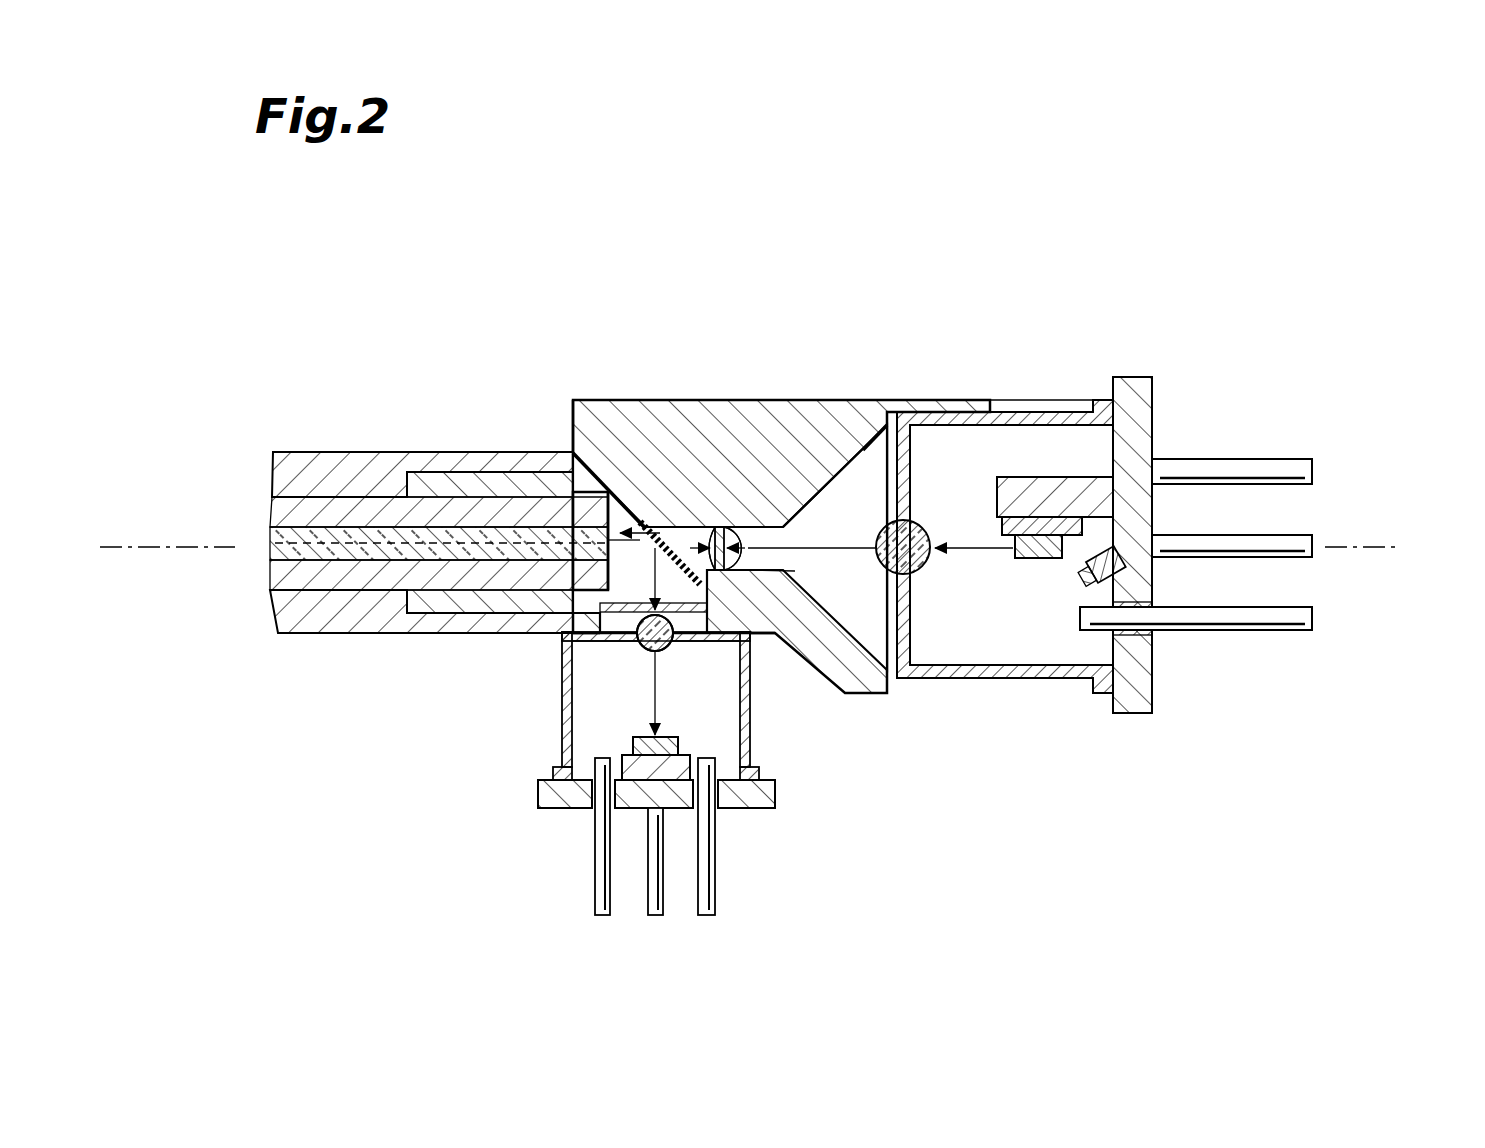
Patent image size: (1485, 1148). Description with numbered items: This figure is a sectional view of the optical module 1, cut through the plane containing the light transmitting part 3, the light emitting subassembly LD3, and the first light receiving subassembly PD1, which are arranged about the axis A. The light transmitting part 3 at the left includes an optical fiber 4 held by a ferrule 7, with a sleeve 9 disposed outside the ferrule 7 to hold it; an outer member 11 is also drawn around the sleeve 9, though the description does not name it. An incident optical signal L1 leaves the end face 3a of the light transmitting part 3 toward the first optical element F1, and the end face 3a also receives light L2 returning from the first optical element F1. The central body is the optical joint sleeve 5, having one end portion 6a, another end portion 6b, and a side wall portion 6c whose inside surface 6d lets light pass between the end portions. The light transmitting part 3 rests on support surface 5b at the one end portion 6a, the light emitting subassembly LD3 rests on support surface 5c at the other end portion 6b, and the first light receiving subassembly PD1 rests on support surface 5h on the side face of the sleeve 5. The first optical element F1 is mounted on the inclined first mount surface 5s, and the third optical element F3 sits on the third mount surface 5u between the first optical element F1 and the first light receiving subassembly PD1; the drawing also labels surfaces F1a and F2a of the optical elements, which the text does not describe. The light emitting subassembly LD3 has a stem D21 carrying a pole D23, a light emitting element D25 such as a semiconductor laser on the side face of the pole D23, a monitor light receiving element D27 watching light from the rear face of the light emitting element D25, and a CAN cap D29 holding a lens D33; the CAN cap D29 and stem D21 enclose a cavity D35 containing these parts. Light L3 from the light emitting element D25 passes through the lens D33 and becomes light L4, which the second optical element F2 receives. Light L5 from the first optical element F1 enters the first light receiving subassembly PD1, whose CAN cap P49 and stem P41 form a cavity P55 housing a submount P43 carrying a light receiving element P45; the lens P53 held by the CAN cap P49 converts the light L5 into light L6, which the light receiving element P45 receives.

The optical module 1 is at (1018, 240).
The light transmitting part 3 is at (370, 358).
The end face 3a is at (612, 490).
The optical fiber 4 is at (300, 538).
The optical joint sleeve 5 is at (727, 492).
The support surface 5b is at (550, 628).
The support surface 5c is at (952, 420).
The support surface 5h is at (748, 668).
The first mount surface 5s is at (750, 640).
The third mount surface 5u is at (740, 695).
The one end portion 6a is at (565, 398).
The another end portion 6b is at (1014, 392).
The side wall portion 6c is at (812, 470).
The inside surface 6d is at (823, 497).
The ferrule 7 is at (343, 508).
The sleeve 9 is at (440, 483).
The connector housing 11 is at (470, 456).
The axis A is at (178, 547).
The first optical element F1 is at (712, 535).
The first lens surface region F1a is at (706, 530).
The second optical element F2 is at (767, 512).
The second lens surface F2a is at (740, 528).
The third optical element F3 is at (630, 638).
The incident optical signal L1 is at (724, 560).
The light L2 is at (578, 523).
The light L3 is at (974, 533).
The light L4 is at (812, 530).
The light L5 is at (636, 579).
The light L6 is at (672, 692).
The light emitting subassembly LD3 is at (1094, 519).
The stem D21 is at (1125, 685).
The pole D23 is at (1078, 497).
The light emitting element D25 is at (1043, 562).
The monitor light receiving element D27 is at (1130, 573).
The CAN cap D29 is at (1076, 683).
The lens D33 is at (917, 563).
The cavity D35 is at (1003, 645).
The first light receiving subassembly PD1 is at (679, 765).
The stem P41 is at (560, 795).
The submount P43 is at (700, 752).
The light receiving element P45 is at (680, 737).
The CAN cap P49 is at (567, 750).
The lens P53 is at (647, 650).
The cavity P55 is at (585, 725).